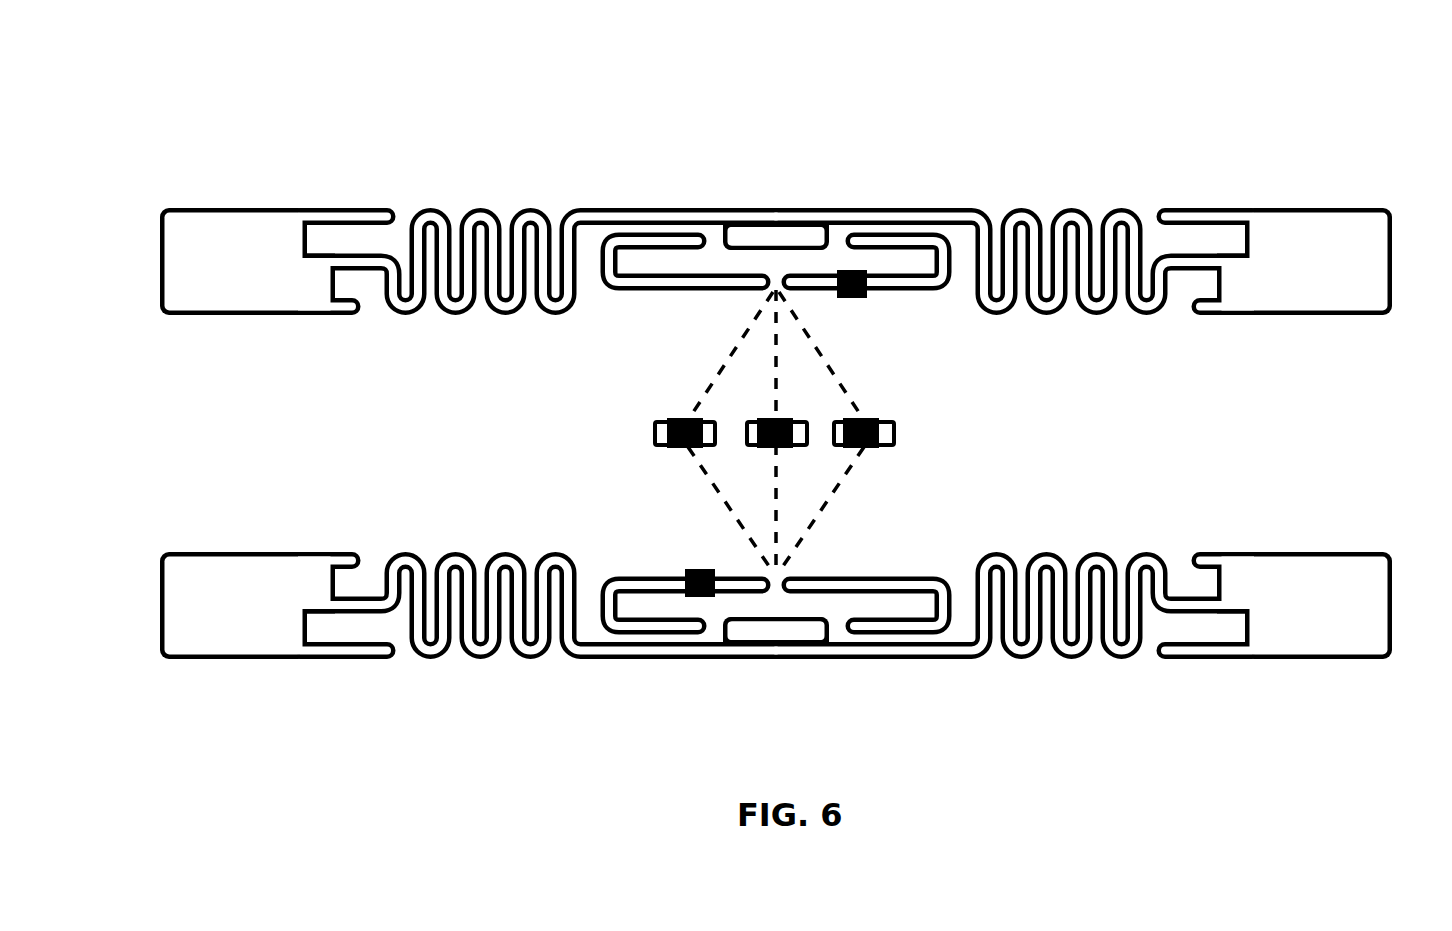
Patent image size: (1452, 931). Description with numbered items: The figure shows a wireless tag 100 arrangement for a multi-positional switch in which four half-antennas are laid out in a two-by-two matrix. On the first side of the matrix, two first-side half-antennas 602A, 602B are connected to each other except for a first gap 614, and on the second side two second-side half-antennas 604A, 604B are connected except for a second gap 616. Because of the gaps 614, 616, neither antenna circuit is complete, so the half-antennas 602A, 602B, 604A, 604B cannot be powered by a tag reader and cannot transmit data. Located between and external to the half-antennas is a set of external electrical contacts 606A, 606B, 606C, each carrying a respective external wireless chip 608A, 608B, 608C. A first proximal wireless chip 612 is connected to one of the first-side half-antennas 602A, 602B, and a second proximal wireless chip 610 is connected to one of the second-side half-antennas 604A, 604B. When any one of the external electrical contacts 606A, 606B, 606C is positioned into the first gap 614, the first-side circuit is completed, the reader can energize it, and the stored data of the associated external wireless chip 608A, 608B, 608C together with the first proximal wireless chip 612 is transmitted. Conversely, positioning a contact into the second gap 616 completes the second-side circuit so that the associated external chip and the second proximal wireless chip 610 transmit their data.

The wireless tag 100 is at (430, 66).
The first-side half-antenna 602A is at (158, 283).
The first-side half-antenna 602B is at (1394, 283).
The second-side half-antenna 604A is at (158, 618).
The second-side half-antenna 604B is at (1394, 618).
The external electrical contact 606A is at (890, 445).
The external electrical contact 606B is at (747, 422).
The external electrical contact 606C is at (654, 430).
The external wireless chip 608A is at (867, 449).
The external wireless chip 608B is at (788, 422).
The external wireless chip 608C is at (680, 418).
The second proximal wireless chip 610 is at (695, 567).
The first proximal wireless chip 612 is at (864, 295).
The first gap 614 is at (776, 272).
The second gap 616 is at (781, 577).